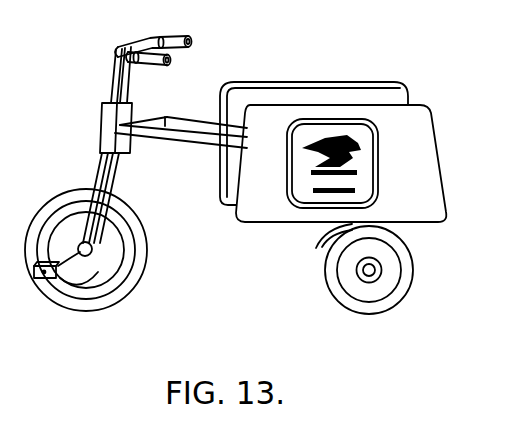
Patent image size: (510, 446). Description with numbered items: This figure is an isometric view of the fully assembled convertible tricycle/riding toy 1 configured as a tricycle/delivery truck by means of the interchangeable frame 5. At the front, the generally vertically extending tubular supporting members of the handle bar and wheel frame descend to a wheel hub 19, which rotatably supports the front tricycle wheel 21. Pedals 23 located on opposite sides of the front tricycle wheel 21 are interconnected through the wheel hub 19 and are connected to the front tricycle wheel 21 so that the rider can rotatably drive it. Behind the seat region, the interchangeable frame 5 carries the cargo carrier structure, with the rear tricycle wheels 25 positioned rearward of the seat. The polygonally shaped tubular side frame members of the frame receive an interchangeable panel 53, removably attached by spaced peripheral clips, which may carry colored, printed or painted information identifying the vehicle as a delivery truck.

The convertible tricycle/riding toy 1 is at (194, 88).
The interchangeable frame 5 is at (209, 208).
The wheel hub 19 is at (88, 258).
The front tricycle wheel 21 is at (128, 296).
The pedals 23 is at (60, 274).
The rear tricycle wheels 25 is at (377, 312).
The interchangeable panel 53 is at (395, 137).